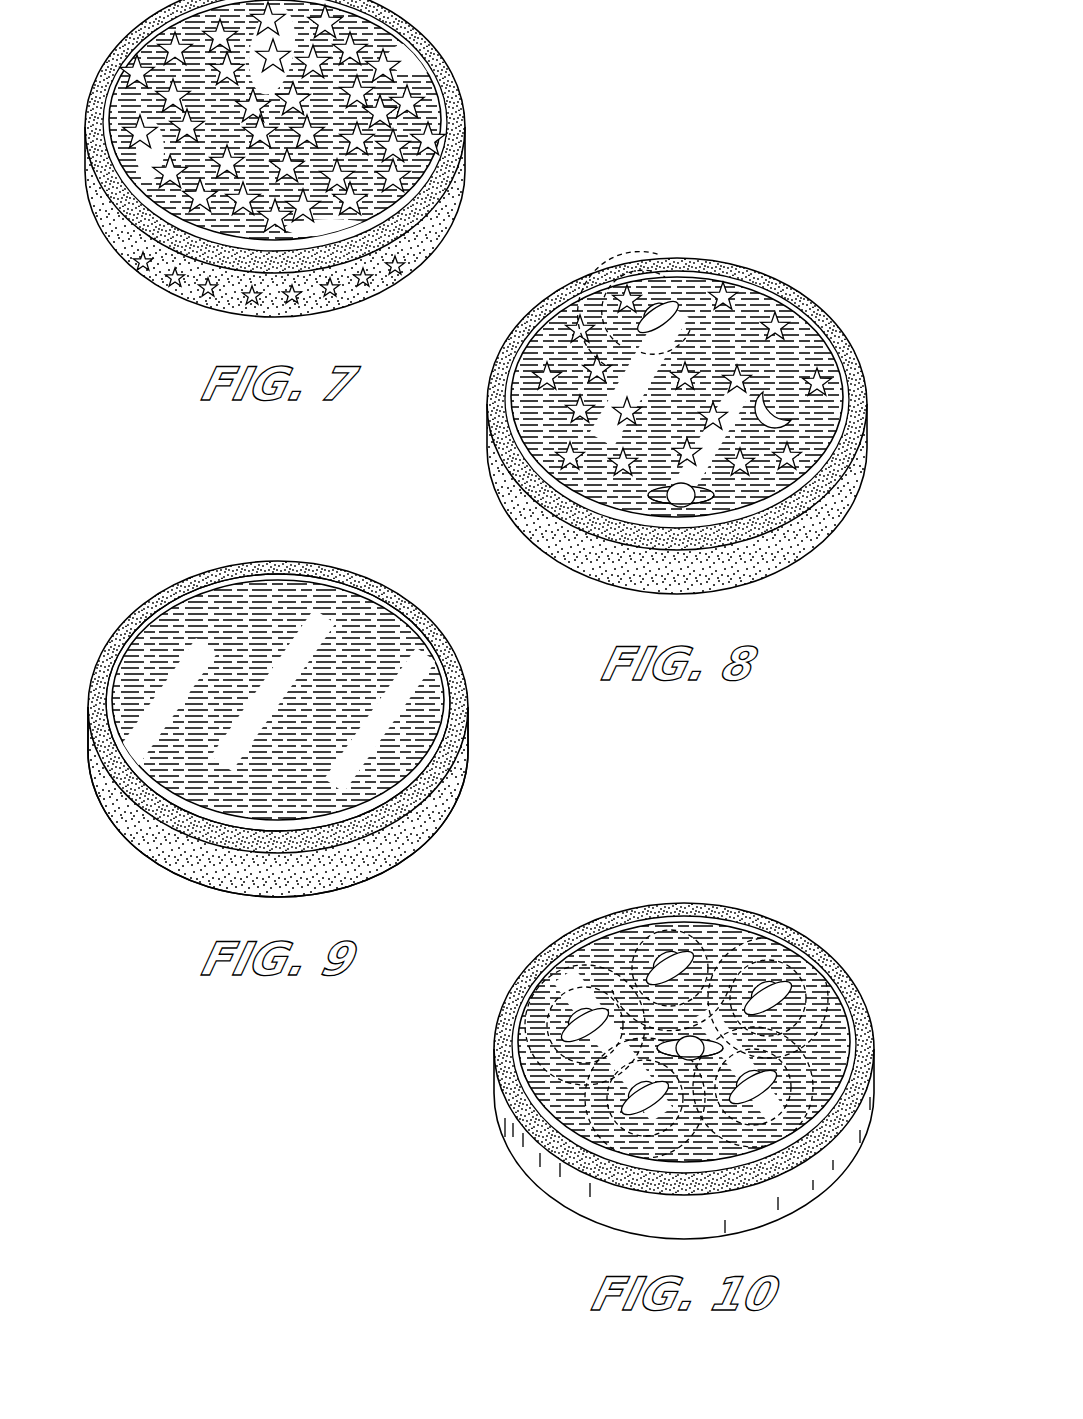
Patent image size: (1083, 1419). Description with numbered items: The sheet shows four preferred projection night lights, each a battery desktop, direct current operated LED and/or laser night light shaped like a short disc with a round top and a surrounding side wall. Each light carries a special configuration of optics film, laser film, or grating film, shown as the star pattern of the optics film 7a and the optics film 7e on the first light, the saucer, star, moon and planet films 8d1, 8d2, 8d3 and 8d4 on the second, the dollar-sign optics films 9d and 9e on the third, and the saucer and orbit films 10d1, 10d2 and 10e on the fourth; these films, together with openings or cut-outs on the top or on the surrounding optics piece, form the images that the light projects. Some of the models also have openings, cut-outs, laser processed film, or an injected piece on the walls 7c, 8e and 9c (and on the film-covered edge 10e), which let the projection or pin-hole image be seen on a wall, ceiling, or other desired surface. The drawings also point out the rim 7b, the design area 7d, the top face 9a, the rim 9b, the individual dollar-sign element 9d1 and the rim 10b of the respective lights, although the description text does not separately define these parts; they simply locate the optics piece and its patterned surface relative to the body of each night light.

In FIG. 7, the optics film 7a is at (135, 60).
In FIG. 7, the rim 7b is at (92, 107).
In FIG. 7, the wall 7c is at (112, 232).
In FIG. 7, the star design 7d is at (105, 218).
In FIG. 7, the optics film 7e is at (140, 263).
In FIG. 8, the optics film 8d1 is at (687, 297).
In FIG. 8, the optics film 8d2 is at (787, 327).
In FIG. 8, the optics film 8d3 is at (800, 418).
In FIG. 8, the optics film 8d4 is at (645, 485).
In FIG. 8, the wall 8e is at (818, 532).
In FIG. 9, the top face 9a is at (125, 640).
In FIG. 9, the rim 9b is at (103, 758).
In FIG. 9, the wall 9c is at (114, 813).
In FIG. 9, the optics film 9d is at (155, 600).
In FIG. 9, the dollar sign design element 9d1 is at (150, 692).
In FIG. 9, the optics film 9e is at (388, 845).
In FIG. 10, the rim 10b is at (505, 1087).
In FIG. 10, the optics film 10d1 is at (700, 1032).
In FIG. 10, the optics film 10d2 is at (828, 980).
In FIG. 10, the optics film 10e is at (815, 1182).